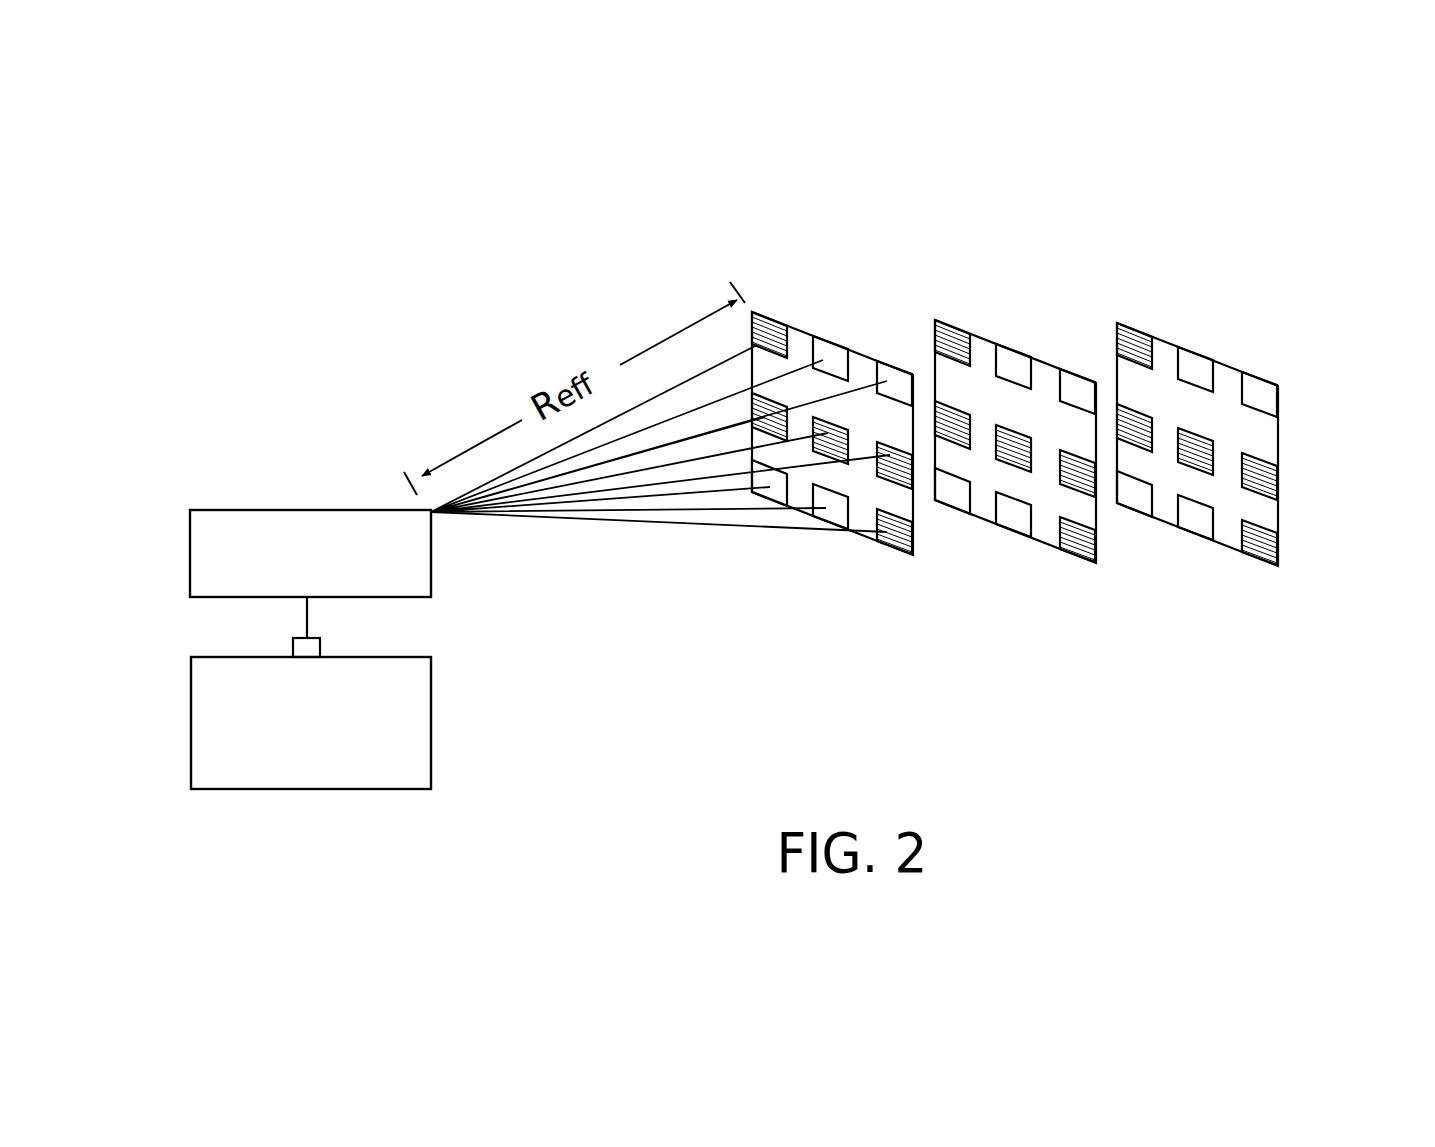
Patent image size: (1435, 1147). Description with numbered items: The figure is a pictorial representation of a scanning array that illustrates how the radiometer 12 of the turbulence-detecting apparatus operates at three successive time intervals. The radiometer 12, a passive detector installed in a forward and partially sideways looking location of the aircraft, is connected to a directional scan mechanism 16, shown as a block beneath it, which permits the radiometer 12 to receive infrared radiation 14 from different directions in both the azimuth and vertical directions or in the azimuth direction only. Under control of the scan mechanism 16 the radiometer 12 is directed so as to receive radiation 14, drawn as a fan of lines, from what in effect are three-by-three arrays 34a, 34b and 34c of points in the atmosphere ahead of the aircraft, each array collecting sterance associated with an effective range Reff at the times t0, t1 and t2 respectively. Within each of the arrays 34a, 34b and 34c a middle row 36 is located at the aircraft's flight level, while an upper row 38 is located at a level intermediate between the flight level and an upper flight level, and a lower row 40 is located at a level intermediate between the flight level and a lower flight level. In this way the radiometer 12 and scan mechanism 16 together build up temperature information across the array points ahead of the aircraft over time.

The radiometer 12 is at (232, 510).
The radiation 14 is at (619, 535).
The directional scan mechanism 16 is at (318, 789).
The array 34a is at (797, 328).
The array 34b is at (989, 341).
The array 34c is at (1268, 434).
The middle row 36 is at (1331, 478).
The upper row 38 is at (1331, 403).
The lower row 40 is at (1331, 549).